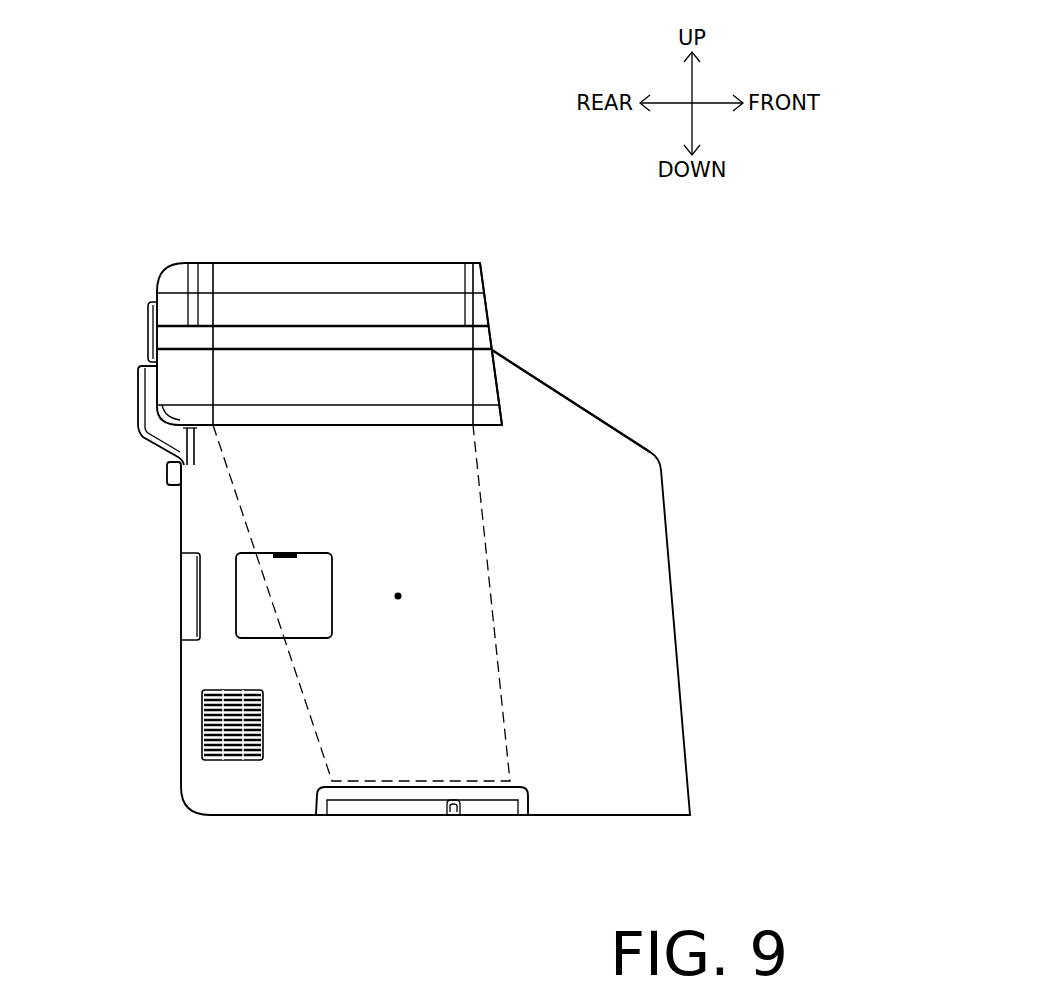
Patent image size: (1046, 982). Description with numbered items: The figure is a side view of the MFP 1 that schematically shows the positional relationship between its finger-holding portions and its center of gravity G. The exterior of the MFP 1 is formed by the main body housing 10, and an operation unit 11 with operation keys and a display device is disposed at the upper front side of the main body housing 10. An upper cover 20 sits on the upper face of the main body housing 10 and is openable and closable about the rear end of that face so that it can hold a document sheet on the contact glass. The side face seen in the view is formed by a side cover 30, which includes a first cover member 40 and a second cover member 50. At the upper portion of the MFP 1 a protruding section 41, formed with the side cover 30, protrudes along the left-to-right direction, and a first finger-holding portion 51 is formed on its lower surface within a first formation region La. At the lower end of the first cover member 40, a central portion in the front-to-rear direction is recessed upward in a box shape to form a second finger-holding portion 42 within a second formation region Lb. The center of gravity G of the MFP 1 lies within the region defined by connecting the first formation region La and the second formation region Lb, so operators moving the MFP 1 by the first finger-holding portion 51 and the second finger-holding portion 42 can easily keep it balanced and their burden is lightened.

The MFP 1 is at (153, 175).
The main body housing 10 is at (679, 693).
The operation unit 11 is at (527, 372).
The upper cover 20 is at (172, 337).
The side cover 30 is at (85, 368).
The first cover member 40 is at (205, 515).
The protruding section 41 is at (482, 385).
The second finger-holding portion 42 is at (482, 803).
The second cover member 50 is at (172, 387).
The first finger-holding portion 51 is at (402, 427).
The center of gravity G is at (398, 596).
The first formation region La is at (213, 263).
The second formation region Lb is at (332, 770).